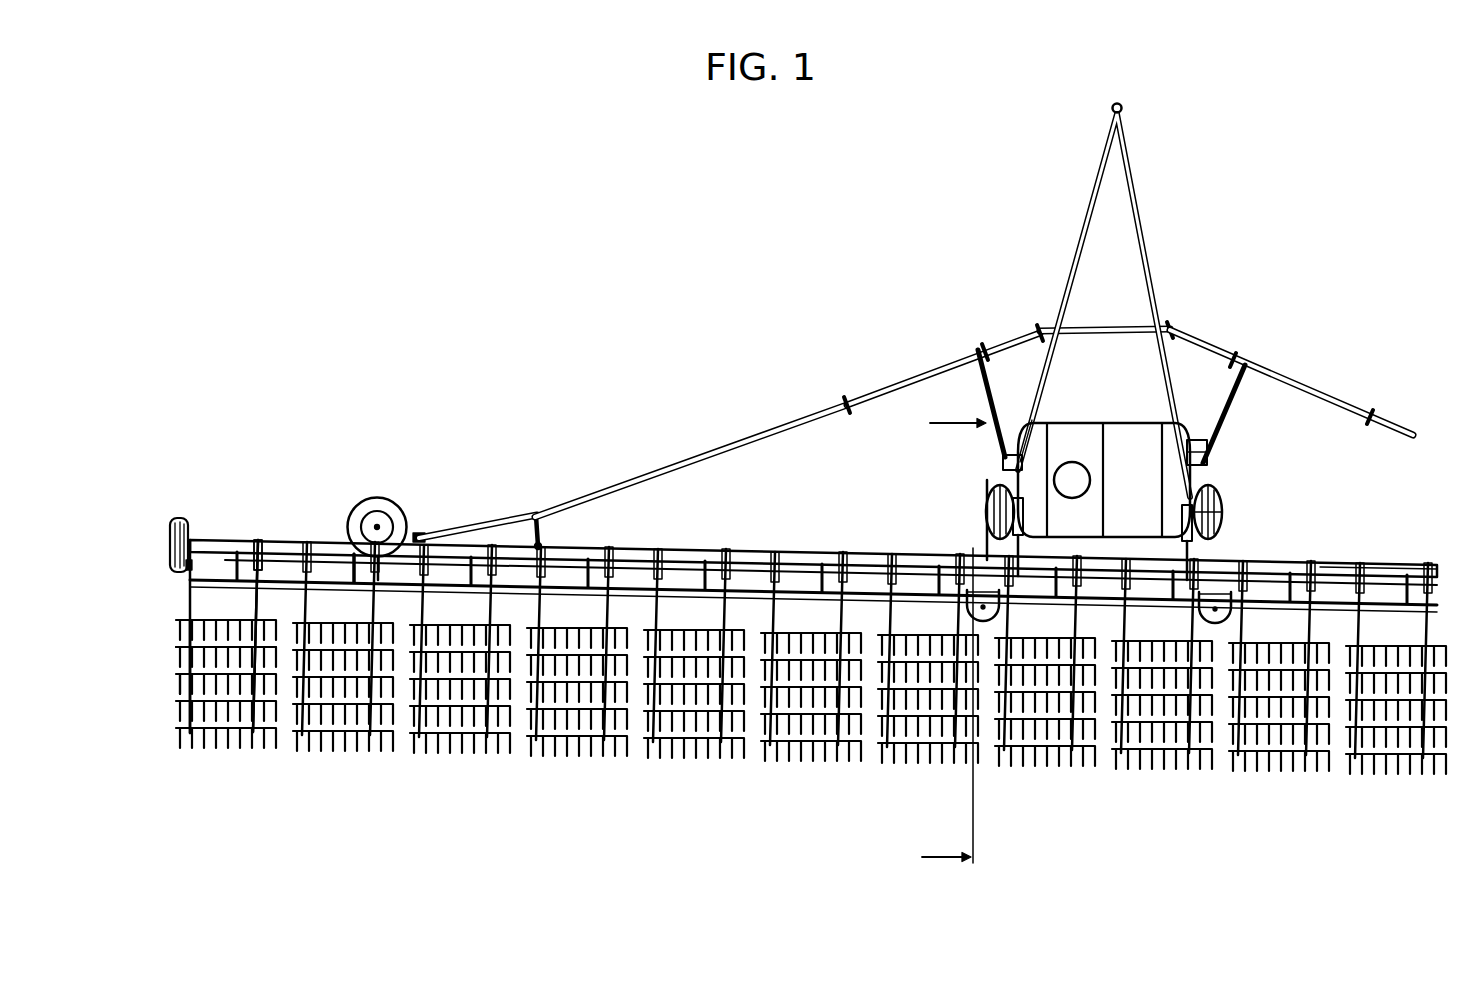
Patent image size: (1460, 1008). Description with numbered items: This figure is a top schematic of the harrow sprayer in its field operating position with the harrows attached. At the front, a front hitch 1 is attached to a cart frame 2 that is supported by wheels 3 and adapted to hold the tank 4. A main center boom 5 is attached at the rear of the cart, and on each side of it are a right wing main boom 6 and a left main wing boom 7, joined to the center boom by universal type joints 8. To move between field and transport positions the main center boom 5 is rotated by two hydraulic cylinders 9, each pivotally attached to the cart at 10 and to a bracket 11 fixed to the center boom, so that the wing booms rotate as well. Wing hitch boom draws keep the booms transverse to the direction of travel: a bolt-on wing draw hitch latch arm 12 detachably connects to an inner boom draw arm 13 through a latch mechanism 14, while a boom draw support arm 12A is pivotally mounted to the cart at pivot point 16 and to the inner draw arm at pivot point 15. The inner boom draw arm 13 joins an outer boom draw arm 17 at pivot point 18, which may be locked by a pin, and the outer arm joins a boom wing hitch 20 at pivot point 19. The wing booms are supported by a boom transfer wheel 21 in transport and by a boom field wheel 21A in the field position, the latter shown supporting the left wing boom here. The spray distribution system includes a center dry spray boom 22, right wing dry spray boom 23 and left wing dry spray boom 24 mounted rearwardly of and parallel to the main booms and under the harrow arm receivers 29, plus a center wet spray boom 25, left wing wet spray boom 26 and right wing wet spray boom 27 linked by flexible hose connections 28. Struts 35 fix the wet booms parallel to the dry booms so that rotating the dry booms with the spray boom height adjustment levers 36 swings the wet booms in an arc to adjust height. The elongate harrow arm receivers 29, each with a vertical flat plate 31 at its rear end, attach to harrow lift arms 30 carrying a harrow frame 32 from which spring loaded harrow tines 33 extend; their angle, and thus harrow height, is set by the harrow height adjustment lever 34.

The front hitch 1 is at (1135, 172).
The cart frame 2 is at (1208, 446).
The wheels 3 is at (1222, 512).
The tank 4 is at (1257, 412).
The main center boom 5 is at (1040, 572).
The right wing main boom 6 is at (1333, 563).
The left main wing boom 7 is at (697, 550).
The universal type joints 8 is at (1215, 565).
The hydraulic cylinders 9 is at (988, 500).
The pivot attachment on cart 10 is at (1012, 490).
The bracket 11 is at (990, 548).
The wing draw hitch latch arm 12 is at (1017, 345).
The boom draw support arm 12A is at (1015, 337).
The inner boom draw arm 13 is at (918, 365).
The latch mechanism 14 is at (975, 350).
The pivot point 15 is at (984, 356).
The pivot point 16 is at (1013, 455).
The outer boom draw arm 17 is at (730, 437).
The pivot point 18 is at (843, 398).
The pivot point 19 is at (536, 512).
The boom wing hitch 20 is at (485, 520).
The boom transfer wheel 21 is at (378, 497).
The boom field wheel 21A is at (180, 518).
The center dry spray boom 22 is at (1100, 580).
The right wing dry spray boom 23 is at (1330, 578).
The left wing dry spray boom 24 is at (333, 557).
The center wet spray boom 25 is at (1075, 583).
The left wing wet spray boom 26 is at (253, 580).
The right wing wet spray boom 27 is at (1345, 608).
The flexible hose connections 28 is at (977, 623).
The harrow arm receivers 29 is at (262, 563).
The harrow lift arms 30 is at (188, 587).
The flat plate 31 is at (172, 570).
The harrow frame 32 is at (180, 657).
The harrow tines 33 is at (172, 673).
The harrow height adjustment lever 34 is at (218, 707).
The struts 35 is at (347, 567).
The spray boom height adjustment levers 36 is at (973, 548).